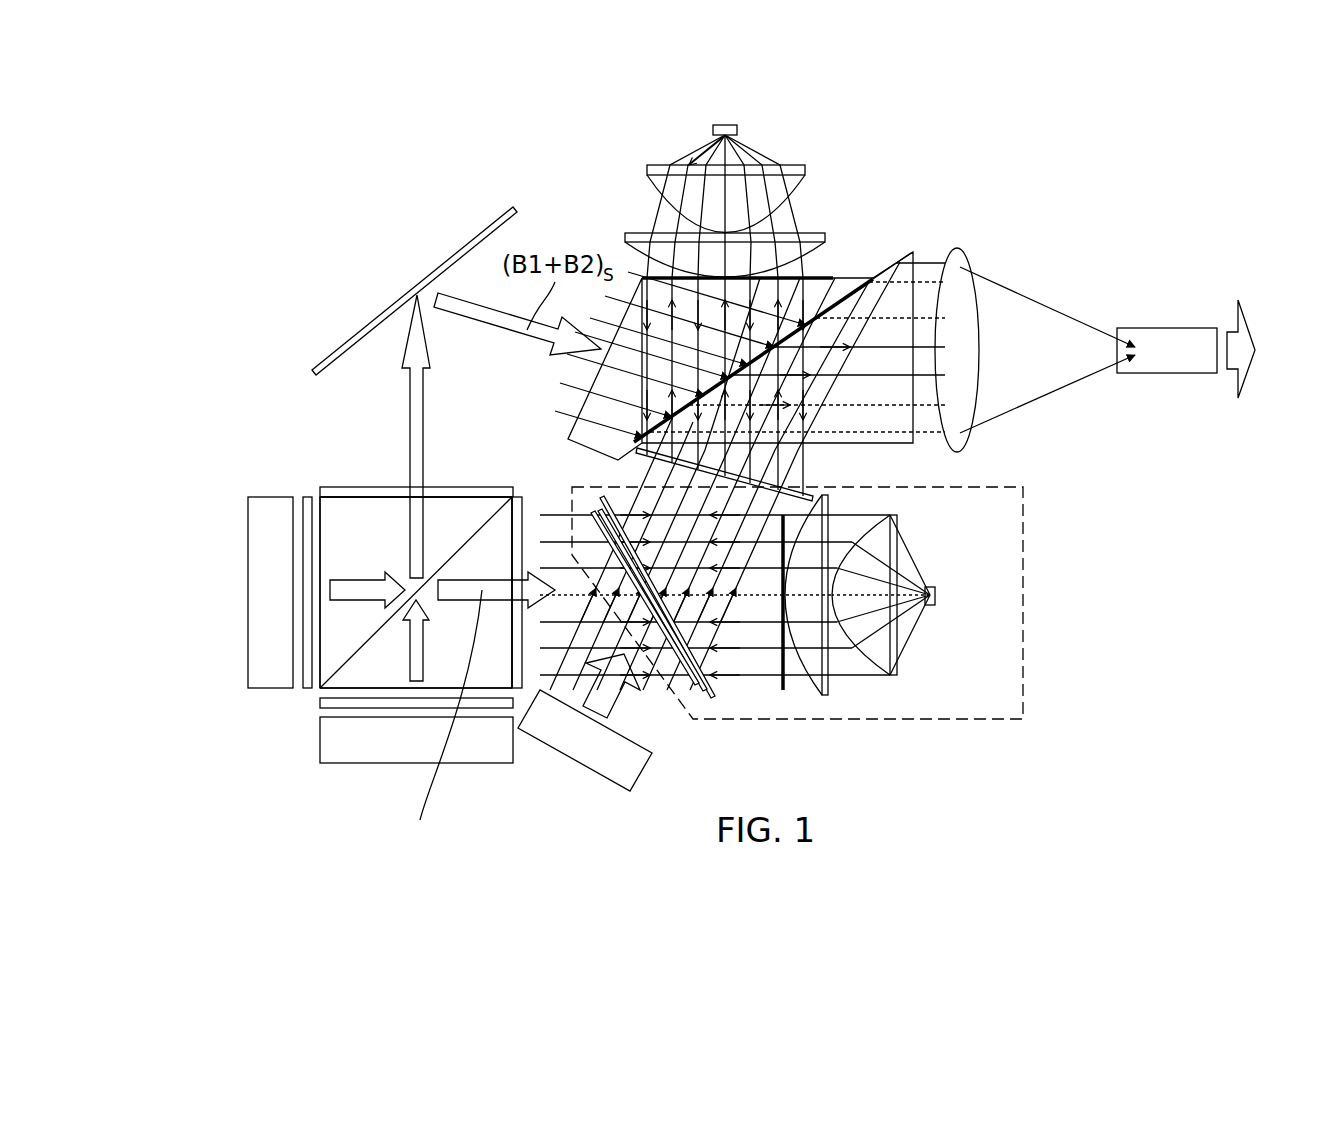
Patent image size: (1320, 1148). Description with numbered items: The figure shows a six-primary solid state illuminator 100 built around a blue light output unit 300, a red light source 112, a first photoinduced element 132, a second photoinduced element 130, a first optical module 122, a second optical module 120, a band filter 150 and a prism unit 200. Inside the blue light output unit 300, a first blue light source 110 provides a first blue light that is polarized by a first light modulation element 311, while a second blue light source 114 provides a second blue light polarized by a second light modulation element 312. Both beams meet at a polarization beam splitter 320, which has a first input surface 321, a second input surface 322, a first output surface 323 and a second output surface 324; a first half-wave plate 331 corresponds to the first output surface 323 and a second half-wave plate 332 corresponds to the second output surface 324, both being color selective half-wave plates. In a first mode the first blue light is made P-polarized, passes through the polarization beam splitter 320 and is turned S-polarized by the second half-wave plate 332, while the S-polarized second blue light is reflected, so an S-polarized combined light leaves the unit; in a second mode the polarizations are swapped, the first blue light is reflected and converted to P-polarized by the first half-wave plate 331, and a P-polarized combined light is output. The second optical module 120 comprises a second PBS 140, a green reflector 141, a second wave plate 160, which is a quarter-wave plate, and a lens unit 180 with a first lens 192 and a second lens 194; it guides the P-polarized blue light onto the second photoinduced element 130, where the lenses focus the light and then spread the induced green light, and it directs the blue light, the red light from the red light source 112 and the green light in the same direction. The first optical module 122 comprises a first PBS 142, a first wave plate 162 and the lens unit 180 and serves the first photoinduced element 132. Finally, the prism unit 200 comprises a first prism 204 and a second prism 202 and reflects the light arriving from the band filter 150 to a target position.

The six-primary solid state illuminator 100 is at (212, 157).
The first blue light source 110 is at (338, 740).
The red light source 112 is at (573, 745).
The second blue light source 114 is at (265, 593).
The second optical module 120 is at (1023, 595).
The first optical module 122 is at (908, 170).
The second photoinduced element 130 is at (937, 595).
The first photoinduced element 132 is at (740, 130).
The second PBS 140 is at (697, 685).
The green reflector 141 is at (713, 698).
The first PBS 142 is at (845, 278).
The band filter 150 is at (817, 490).
The second wave plate 160 is at (785, 690).
The first wave plate 162 is at (822, 277).
The lens unit 180 is at (560, 143).
The first lens 192 is at (642, 236).
The second lens 194 is at (655, 180).
The prism unit 200 is at (1012, 170).
The second prism 202 is at (937, 303).
The first prism 204 is at (870, 278).
The blue light output unit 300 is at (247, 763).
The first light modulation element 311 is at (320, 705).
The second light modulation element 312 is at (305, 497).
The polarization beam splitter 320 is at (497, 548).
The first input surface 321 is at (352, 690).
The second input surface 322 is at (320, 538).
The first output surface 323 is at (513, 535).
The second output surface 324 is at (457, 497).
The first half-wave plate 331 is at (510, 667).
The second half-wave plate 332 is at (365, 490).